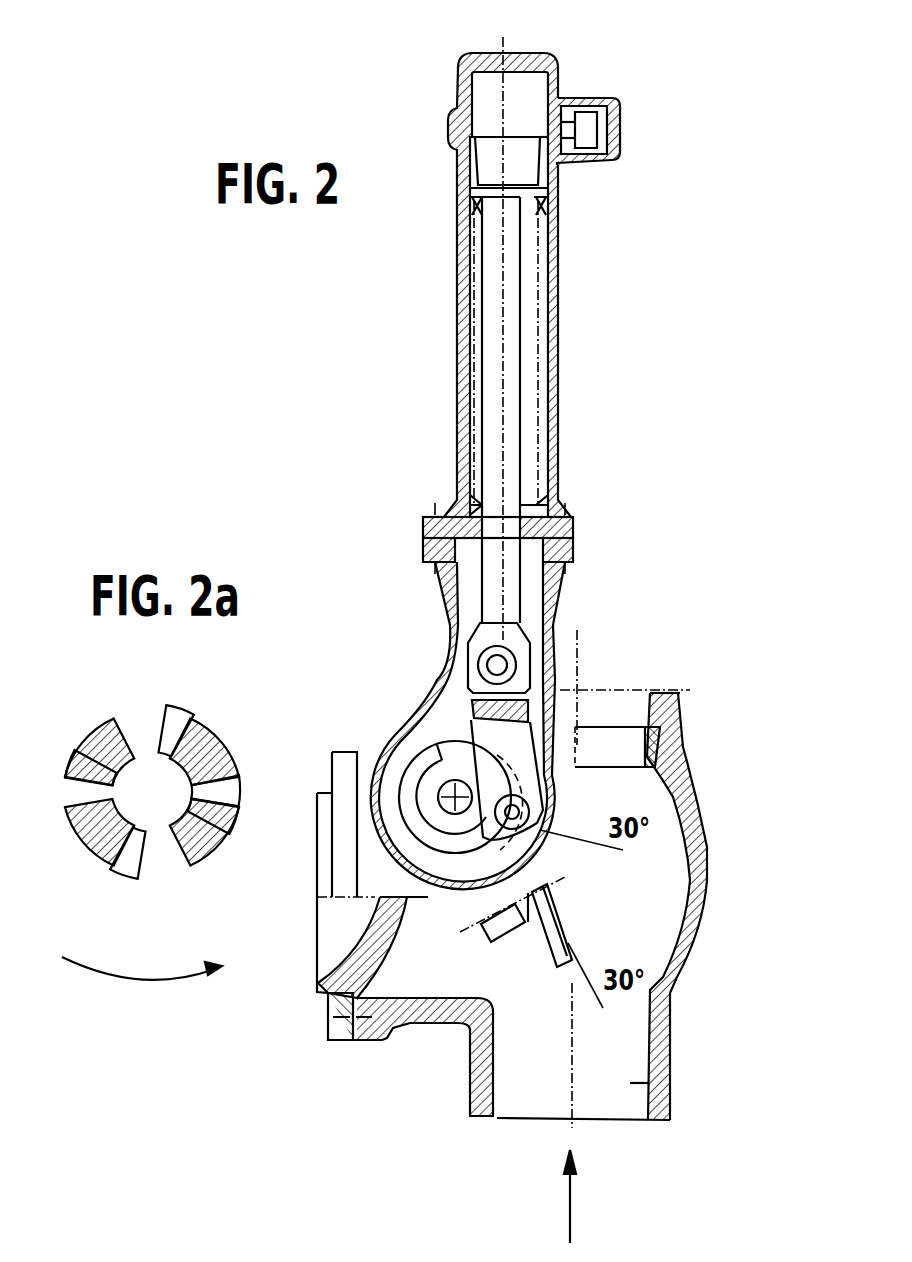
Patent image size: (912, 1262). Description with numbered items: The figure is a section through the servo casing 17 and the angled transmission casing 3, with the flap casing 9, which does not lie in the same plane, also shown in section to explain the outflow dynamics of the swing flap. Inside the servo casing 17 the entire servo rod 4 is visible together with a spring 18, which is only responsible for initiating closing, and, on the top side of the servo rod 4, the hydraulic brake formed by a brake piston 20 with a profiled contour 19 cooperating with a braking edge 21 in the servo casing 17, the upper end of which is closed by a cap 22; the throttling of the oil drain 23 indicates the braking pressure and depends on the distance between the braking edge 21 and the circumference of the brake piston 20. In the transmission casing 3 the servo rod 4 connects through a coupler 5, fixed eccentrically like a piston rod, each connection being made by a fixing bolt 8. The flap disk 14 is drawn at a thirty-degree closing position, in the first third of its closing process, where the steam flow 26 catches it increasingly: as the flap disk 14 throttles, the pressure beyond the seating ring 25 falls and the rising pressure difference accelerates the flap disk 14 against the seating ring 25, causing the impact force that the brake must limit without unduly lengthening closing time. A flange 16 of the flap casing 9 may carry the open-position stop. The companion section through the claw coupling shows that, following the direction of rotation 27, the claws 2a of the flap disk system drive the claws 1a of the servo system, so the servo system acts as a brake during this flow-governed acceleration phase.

In FIG. 2, the cap 22 is at (523, 80).
In FIG. 2, the braking edge 21 is at (473, 112).
In FIG. 2, the oil drain 23 is at (543, 130).
In FIG. 2, the brake piston 20 is at (520, 165).
In FIG. 2, the profiled contour 19 is at (477, 158).
In FIG. 2, the servo casing 17 is at (557, 302).
In FIG. 2, the spring 18 is at (538, 357).
In FIG. 2, the servo rod 4 is at (510, 428).
In FIG. 2, the transmission casing 3 is at (557, 593).
In FIG. 2, the coupler 5 is at (517, 733).
In FIG. 2, the seating ring 25 is at (663, 745).
In FIG. 2, the fixing bolt 8 is at (512, 812).
In FIG. 2, the flap casing 9 is at (702, 880).
In FIG. 2, the flap disk 14 is at (553, 947).
In FIG. 2, the flange 16 is at (343, 1020).
In FIG. 2, the steam flow 26 is at (570, 1220).
In FIG. 2a, the coupling part 1a is at (215, 783).
In FIG. 2a, the coupling part 2a is at (200, 843).
In FIG. 2a, the direction of rotation 27 is at (150, 979).